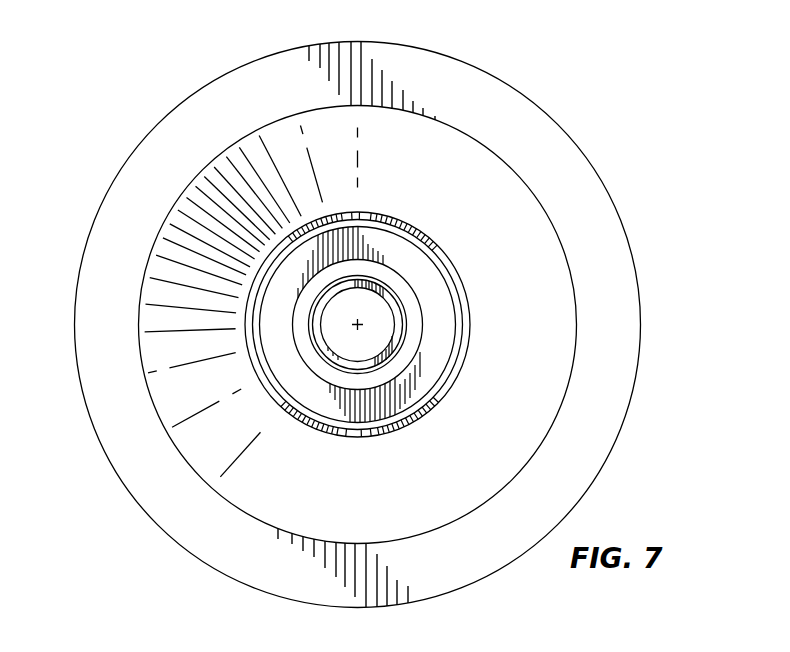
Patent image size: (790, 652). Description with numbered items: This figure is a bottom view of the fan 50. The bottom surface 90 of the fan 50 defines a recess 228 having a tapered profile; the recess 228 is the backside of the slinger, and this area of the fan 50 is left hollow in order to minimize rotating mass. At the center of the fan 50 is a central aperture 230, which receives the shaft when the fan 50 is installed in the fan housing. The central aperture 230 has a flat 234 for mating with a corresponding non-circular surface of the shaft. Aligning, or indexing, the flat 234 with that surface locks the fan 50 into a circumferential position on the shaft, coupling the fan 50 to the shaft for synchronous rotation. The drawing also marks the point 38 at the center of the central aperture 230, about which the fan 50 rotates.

The fan 50 is at (130, 98).
The recess 228 is at (519, 293).
The bottom surface 90 is at (492, 383).
The flat 234 is at (355, 278).
The central aperture 230 is at (343, 334).
The rotational axis 38 is at (358, 325).